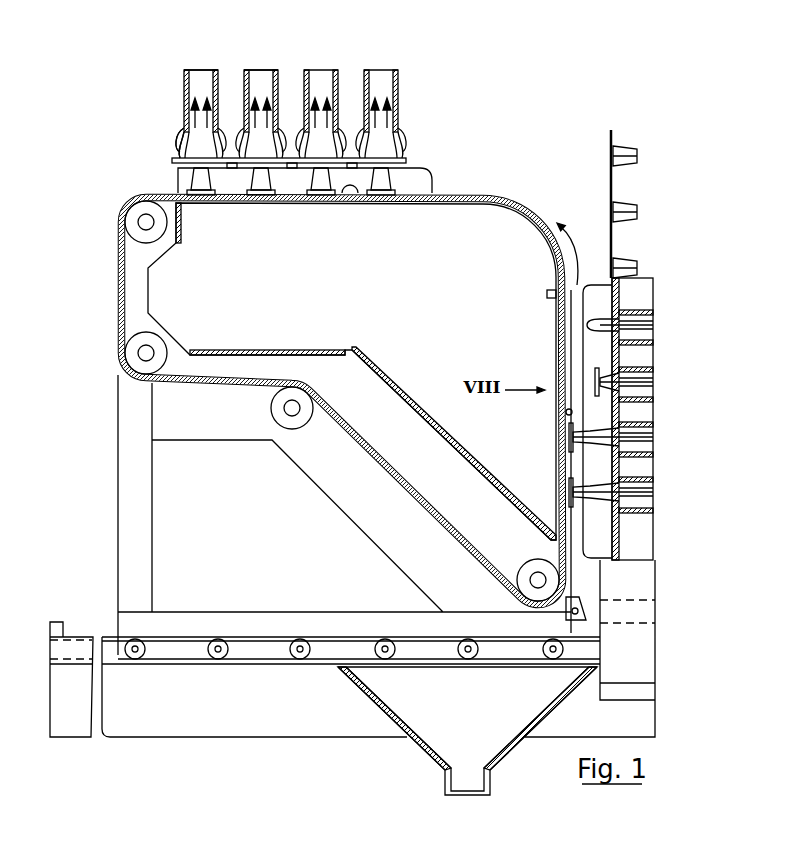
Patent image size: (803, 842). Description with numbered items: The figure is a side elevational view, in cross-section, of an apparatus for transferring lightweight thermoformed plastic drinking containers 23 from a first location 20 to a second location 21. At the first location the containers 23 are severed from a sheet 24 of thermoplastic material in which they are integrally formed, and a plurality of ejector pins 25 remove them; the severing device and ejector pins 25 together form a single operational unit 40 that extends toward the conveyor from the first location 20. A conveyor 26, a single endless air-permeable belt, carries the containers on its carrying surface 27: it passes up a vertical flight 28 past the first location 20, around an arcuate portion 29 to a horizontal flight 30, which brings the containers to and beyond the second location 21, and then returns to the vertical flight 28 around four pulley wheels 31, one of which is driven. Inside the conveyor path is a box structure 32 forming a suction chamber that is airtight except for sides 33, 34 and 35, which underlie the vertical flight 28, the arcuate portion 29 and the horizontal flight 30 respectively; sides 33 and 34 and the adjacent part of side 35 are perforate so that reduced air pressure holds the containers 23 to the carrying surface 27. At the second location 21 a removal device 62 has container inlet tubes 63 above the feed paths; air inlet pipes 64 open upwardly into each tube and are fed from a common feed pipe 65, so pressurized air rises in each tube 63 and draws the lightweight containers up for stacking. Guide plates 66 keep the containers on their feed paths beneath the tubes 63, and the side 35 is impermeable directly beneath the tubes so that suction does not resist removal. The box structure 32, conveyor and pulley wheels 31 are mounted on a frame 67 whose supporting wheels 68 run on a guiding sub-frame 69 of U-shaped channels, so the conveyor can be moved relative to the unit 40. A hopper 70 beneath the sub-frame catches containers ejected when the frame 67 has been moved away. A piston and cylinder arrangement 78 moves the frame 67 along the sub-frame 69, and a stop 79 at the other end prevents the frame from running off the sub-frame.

The first location 20 is at (624, 287).
The second location 21 is at (392, 178).
The containers 23 is at (640, 160).
The sheet 24 is at (615, 133).
The ejector pins 25 is at (653, 330).
The conveyor 26 is at (543, 233).
The carrying surface 27 is at (478, 194).
The vertical flight 28 is at (556, 416).
The arcuate portion 29 is at (517, 204).
The horizontal flight 30 is at (355, 196).
The pulley wheels 31 is at (123, 222).
The box structure 32 is at (420, 298).
The side 33 is at (553, 340).
The side 34 is at (537, 238).
The side 35 is at (420, 203).
The operational unit 40 is at (655, 545).
The removal device 62 is at (178, 73).
The container inlet tubes 63 is at (247, 70).
The air inlet pipes 64 is at (182, 132).
The common feed pipe 65 is at (184, 148).
The guide plates 66 is at (428, 172).
The frame 67 is at (118, 564).
The supporting wheels 68 is at (218, 660).
The guiding sub-frame 69 is at (247, 655).
The hopper 70 is at (413, 745).
The piston and cylinder arrangement 78 is at (580, 600).
The stop 79 is at (60, 622).